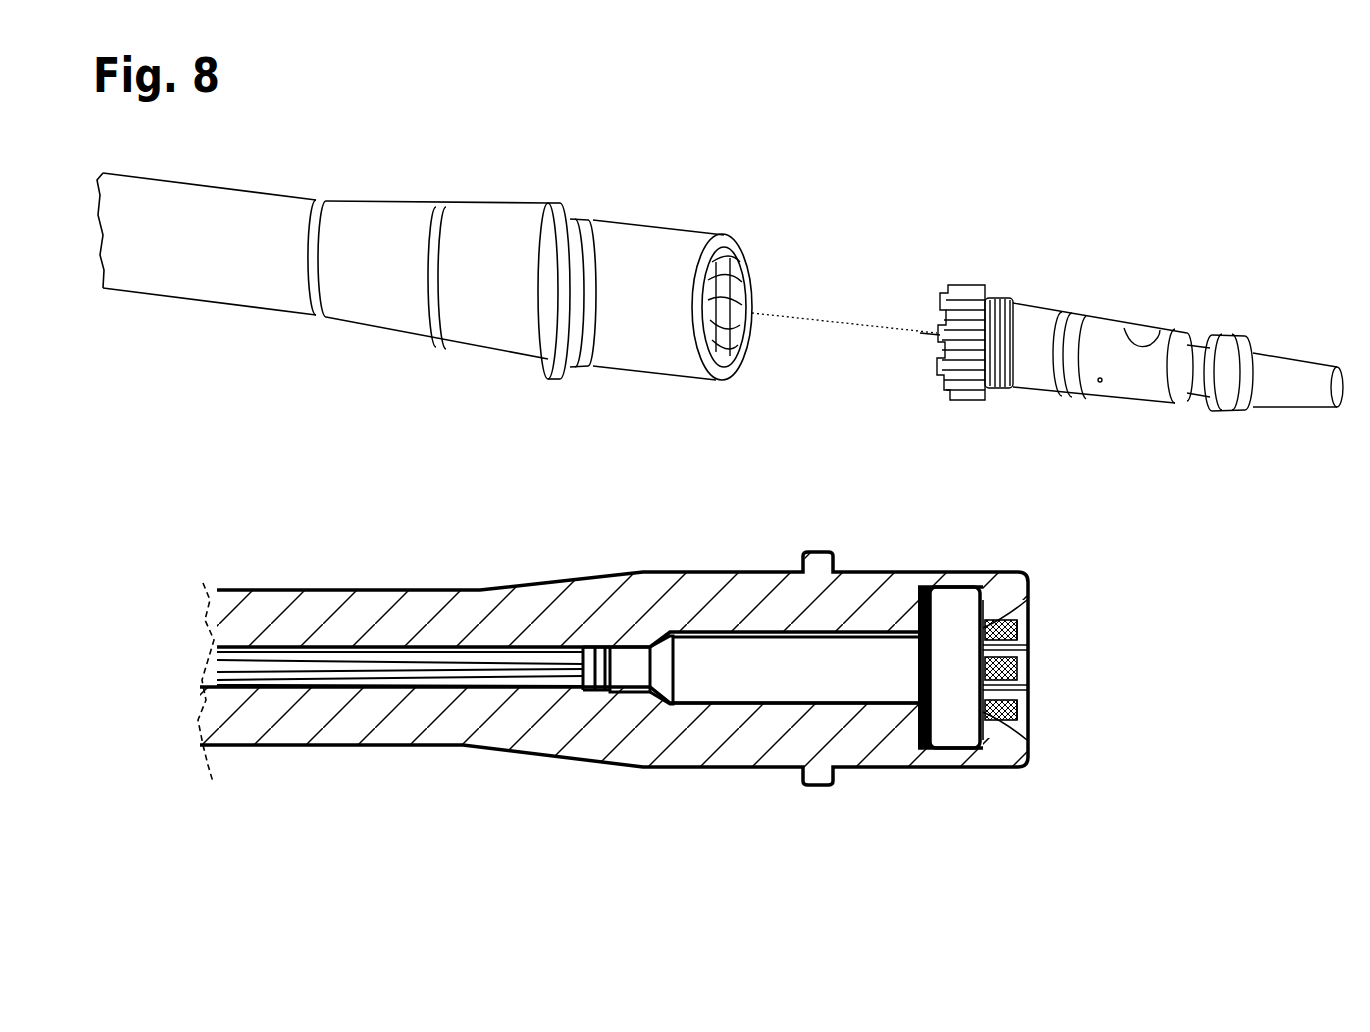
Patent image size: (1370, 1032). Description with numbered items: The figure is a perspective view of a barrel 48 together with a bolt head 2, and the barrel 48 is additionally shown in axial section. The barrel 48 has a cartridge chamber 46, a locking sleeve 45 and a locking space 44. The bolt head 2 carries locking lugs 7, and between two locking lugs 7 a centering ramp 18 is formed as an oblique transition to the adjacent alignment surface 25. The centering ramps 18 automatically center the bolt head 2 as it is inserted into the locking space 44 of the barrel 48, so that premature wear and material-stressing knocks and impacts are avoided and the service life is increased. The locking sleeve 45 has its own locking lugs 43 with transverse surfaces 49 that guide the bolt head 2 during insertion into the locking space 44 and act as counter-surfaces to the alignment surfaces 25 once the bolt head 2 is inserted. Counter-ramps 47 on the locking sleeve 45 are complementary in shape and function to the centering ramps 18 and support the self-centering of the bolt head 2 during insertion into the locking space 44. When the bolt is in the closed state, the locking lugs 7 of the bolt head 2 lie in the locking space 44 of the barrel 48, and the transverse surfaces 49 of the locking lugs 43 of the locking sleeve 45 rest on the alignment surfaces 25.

The bolt head 2 is at (1131, 304).
The locking lugs 7 is at (975, 283).
The centering ramp 18 is at (997, 387).
The alignment surface 25 is at (1020, 300).
The locking lugs of the locking sleeve 43 is at (730, 290).
The locking space 44 is at (947, 693).
The locking sleeve 45 is at (867, 590).
The cartridge chamber 46 is at (697, 655).
The counter-ramps 47 is at (1027, 643).
The barrel 48 is at (197, 293).
The transverse surfaces 49 is at (1027, 712).